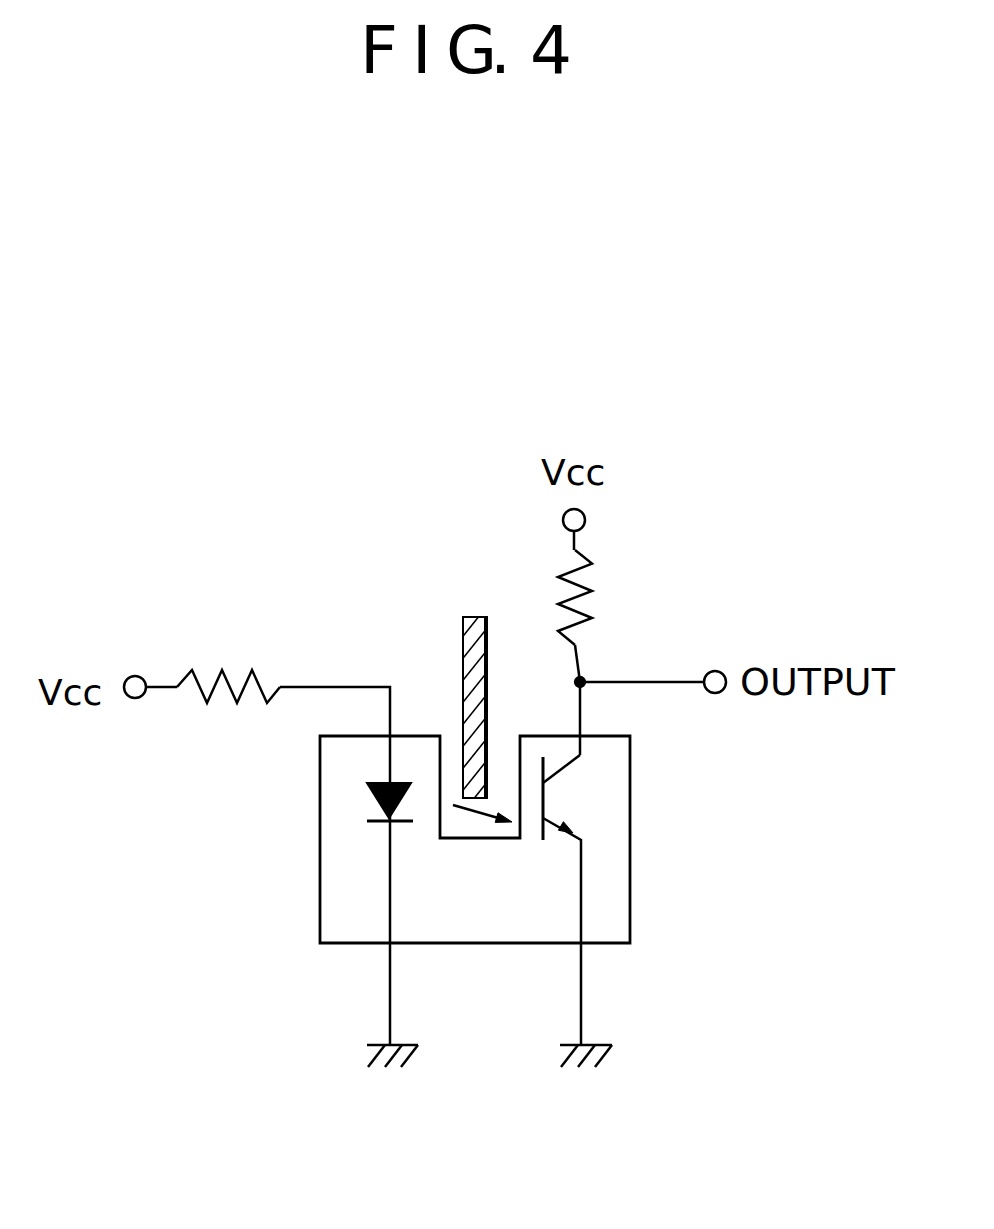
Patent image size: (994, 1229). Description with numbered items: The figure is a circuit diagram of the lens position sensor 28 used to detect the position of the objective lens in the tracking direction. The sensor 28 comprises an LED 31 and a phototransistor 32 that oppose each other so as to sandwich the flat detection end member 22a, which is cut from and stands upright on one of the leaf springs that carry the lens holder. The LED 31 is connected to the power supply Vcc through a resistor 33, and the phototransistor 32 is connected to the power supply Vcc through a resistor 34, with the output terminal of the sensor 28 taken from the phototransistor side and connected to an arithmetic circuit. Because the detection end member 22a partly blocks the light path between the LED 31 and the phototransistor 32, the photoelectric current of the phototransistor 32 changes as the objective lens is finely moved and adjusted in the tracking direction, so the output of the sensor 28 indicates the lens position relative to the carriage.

The detection end member 22a is at (463, 637).
The lens position sensor 28 is at (327, 920).
The LED 31 is at (353, 805).
The phototransistor 32 is at (585, 792).
The resistor 33 is at (242, 665).
The resistor 34 is at (602, 568).